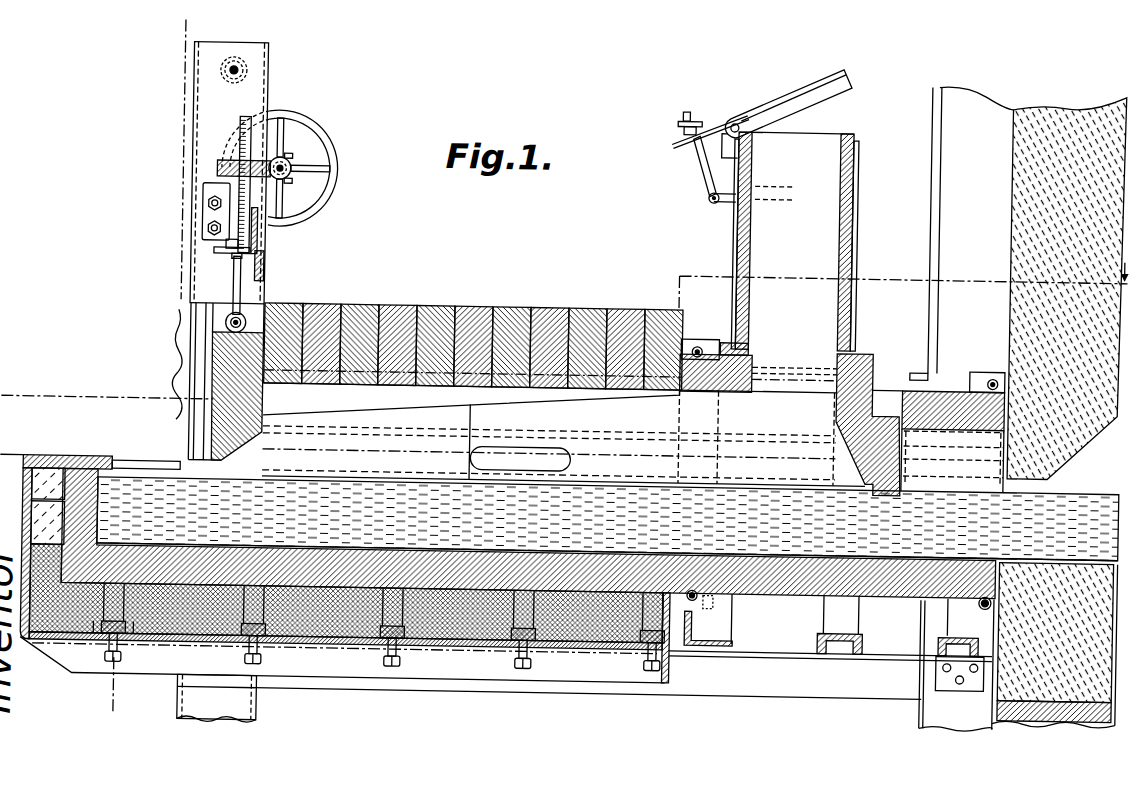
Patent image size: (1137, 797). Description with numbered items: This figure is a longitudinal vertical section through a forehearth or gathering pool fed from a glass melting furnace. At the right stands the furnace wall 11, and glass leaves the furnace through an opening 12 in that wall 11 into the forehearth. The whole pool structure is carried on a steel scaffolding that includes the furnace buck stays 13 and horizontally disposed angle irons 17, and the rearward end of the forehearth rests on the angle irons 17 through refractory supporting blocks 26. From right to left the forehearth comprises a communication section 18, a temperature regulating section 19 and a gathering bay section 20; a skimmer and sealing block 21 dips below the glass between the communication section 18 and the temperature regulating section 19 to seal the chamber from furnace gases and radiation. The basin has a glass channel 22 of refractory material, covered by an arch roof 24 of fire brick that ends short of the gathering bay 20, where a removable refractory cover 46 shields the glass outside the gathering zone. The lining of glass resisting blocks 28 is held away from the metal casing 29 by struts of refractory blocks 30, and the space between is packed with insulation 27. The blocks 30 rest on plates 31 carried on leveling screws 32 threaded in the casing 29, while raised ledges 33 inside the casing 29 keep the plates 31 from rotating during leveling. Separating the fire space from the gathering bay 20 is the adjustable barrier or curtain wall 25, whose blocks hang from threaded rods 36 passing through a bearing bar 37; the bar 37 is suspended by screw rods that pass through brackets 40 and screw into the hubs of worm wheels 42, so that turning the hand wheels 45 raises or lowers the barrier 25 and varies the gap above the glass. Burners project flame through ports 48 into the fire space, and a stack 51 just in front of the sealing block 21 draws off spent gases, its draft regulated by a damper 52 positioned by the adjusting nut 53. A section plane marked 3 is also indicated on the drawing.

The section line 3- 3 is at (173, 34).
The furnace wall 11 is at (1067, 111).
The opening 12 is at (1048, 594).
The furnace buck stays 13 is at (929, 154).
The angle irons 17 is at (946, 634).
The communication section 18 is at (943, 433).
The temperature regulating section 19 is at (647, 488).
The gathering bay section 20 is at (122, 482).
The skimmer and sealing block 21 is at (887, 420).
The glass channel 22 is at (341, 494).
The arch roof 24 is at (435, 307).
The barrier or curtain wall 25 is at (206, 251).
The refractory supporting blocks 26 is at (956, 617).
The insulation 27 is at (453, 624).
The glass resisting blocks 28 is at (304, 580).
The metal casing 29 is at (580, 646).
The refractory blocks 30 is at (363, 644).
The plates 31 is at (521, 643).
The leveling screws 32 is at (128, 664).
The raised ledges 33 is at (100, 645).
The threaded rods 36 is at (235, 296).
The bearing bar 37 is at (226, 262).
The brackets 40 is at (206, 218).
The worm wheels 42 is at (218, 172).
The hand wheels 45 is at (318, 210).
The cover 46 is at (61, 462).
The ports 48 is at (522, 452).
The stack 51 is at (822, 149).
The damper 52 is at (800, 93).
The adjusting nut 53 is at (674, 130).